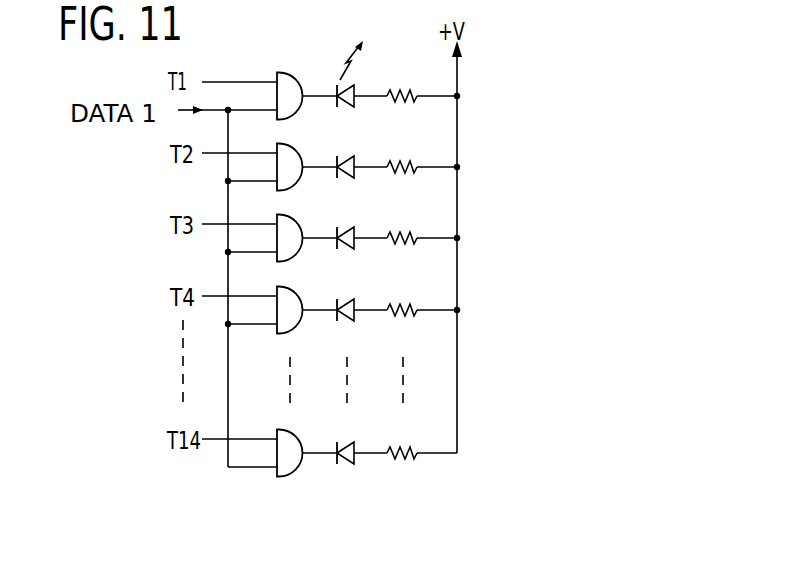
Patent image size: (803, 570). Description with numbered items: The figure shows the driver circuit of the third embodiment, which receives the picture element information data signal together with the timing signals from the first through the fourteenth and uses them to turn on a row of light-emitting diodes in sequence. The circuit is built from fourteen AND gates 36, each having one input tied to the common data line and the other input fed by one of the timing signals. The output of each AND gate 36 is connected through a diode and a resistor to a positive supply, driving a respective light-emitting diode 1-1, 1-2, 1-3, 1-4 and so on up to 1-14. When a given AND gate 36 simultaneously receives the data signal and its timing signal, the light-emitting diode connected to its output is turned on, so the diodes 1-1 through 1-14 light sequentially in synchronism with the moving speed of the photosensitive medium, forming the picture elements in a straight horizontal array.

The AND gate 36 is at (292, 72).
The light-emitting diode 1-1 is at (347, 89).
The light-emitting diode 1-2 is at (348, 182).
The light-emitting diode 1-3 is at (348, 253).
The light-emitting diode 1-4 is at (348, 325).
The light-emitting diode 1-14 is at (357, 468).